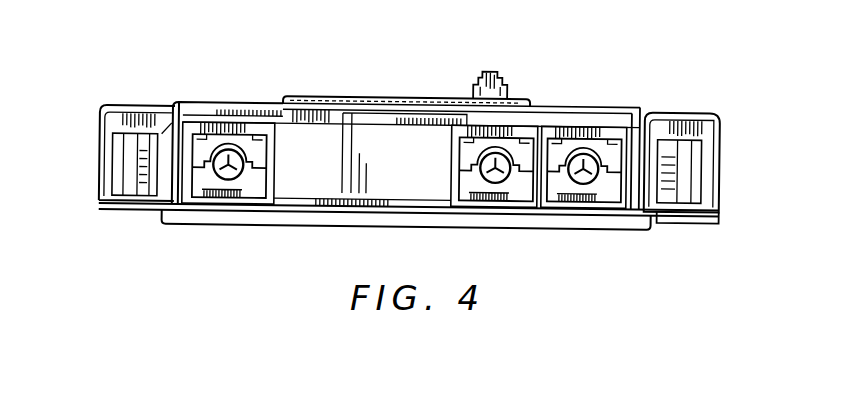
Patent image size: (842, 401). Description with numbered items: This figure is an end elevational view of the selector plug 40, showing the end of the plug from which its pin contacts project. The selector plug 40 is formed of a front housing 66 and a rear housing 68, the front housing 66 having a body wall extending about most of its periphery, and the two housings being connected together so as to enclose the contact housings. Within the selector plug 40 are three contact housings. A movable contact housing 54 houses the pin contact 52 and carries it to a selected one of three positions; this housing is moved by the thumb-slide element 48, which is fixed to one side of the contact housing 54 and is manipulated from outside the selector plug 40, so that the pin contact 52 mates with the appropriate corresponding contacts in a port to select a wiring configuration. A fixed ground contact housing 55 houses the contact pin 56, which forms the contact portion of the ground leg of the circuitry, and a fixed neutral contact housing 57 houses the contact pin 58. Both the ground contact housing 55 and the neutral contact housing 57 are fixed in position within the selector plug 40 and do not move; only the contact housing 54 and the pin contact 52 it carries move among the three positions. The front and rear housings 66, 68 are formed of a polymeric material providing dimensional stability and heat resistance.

The selector plug 40 is at (250, 87).
The thumb-slide element 48 is at (484, 70).
The pin contact 52 is at (478, 163).
The movable contact housing 54 is at (455, 184).
The fixed ground contact housing 55 is at (613, 188).
The contact pin 56 is at (597, 152).
The fixed neutral contact housing 57 is at (200, 143).
The contact pin 58 is at (222, 180).
The front housing 66 is at (666, 100).
The rear housing 68 is at (510, 234).